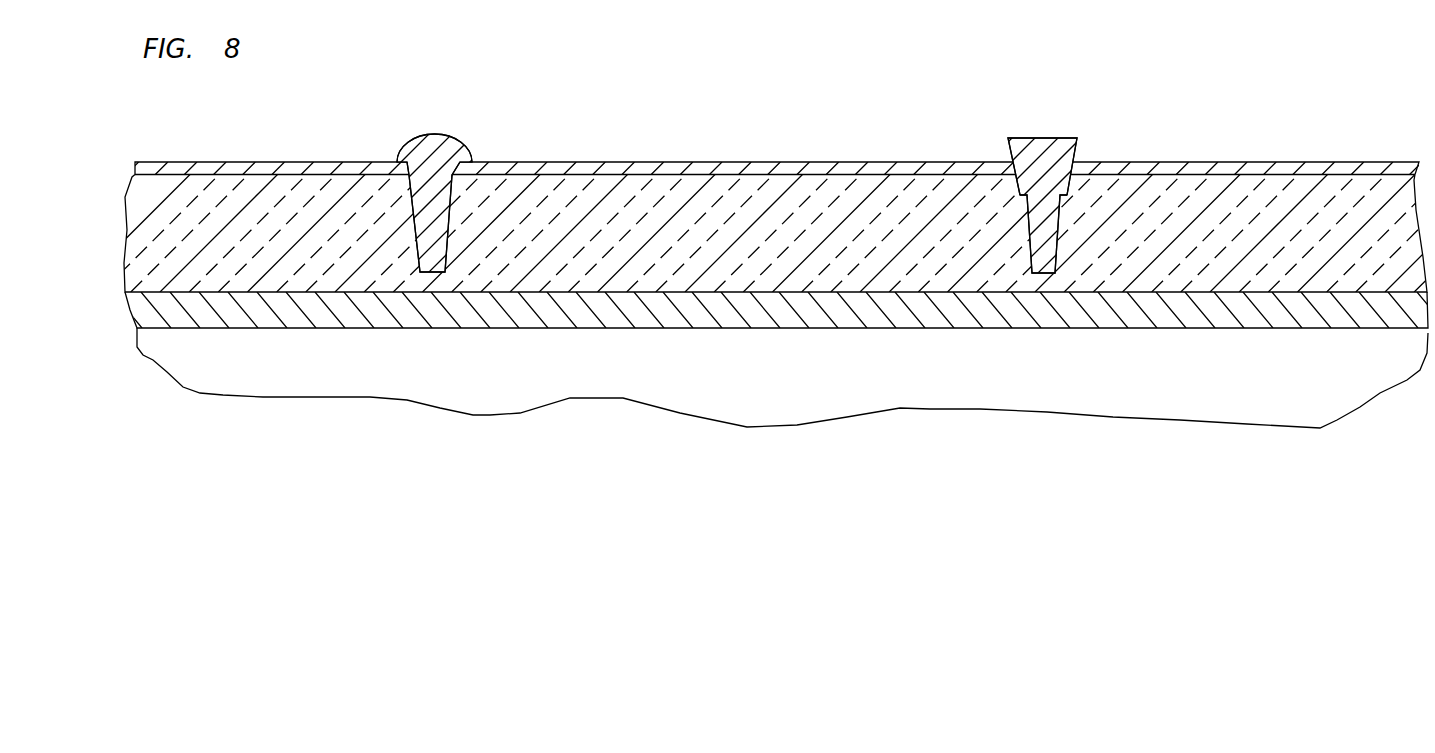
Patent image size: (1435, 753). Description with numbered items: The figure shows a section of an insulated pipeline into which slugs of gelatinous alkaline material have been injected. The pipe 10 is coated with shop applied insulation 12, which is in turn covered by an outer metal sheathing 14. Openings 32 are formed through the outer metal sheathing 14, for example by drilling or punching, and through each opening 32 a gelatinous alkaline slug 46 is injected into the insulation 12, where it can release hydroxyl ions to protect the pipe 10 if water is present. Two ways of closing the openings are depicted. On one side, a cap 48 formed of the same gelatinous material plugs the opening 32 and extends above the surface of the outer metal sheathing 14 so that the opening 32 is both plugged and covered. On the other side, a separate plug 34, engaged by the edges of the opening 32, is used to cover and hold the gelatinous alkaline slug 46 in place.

The pipe section 10 is at (183, 328).
The shop applied insulation 12 is at (286, 241).
The outer metal sheathing 14 is at (243, 160).
The opening 32 is at (422, 152).
The plug 34 is at (1063, 137).
The gelatinous alkaline slug 46 is at (443, 227).
The cap 48 is at (448, 133).